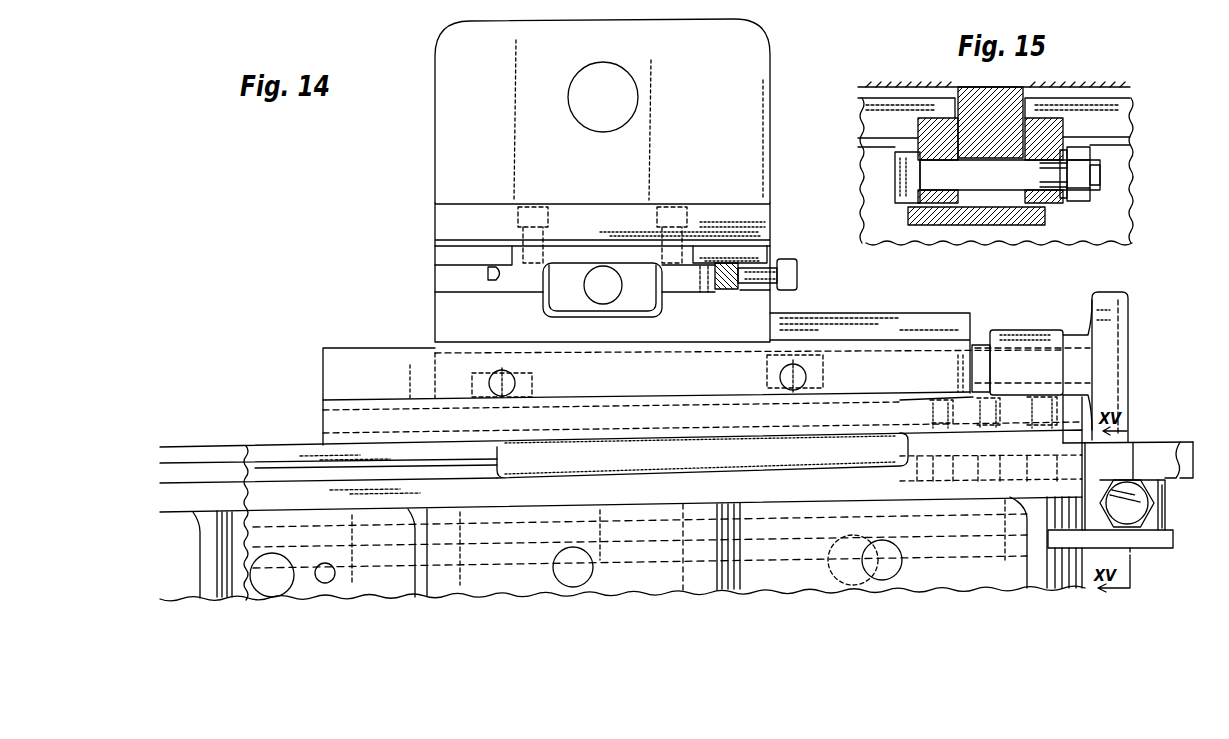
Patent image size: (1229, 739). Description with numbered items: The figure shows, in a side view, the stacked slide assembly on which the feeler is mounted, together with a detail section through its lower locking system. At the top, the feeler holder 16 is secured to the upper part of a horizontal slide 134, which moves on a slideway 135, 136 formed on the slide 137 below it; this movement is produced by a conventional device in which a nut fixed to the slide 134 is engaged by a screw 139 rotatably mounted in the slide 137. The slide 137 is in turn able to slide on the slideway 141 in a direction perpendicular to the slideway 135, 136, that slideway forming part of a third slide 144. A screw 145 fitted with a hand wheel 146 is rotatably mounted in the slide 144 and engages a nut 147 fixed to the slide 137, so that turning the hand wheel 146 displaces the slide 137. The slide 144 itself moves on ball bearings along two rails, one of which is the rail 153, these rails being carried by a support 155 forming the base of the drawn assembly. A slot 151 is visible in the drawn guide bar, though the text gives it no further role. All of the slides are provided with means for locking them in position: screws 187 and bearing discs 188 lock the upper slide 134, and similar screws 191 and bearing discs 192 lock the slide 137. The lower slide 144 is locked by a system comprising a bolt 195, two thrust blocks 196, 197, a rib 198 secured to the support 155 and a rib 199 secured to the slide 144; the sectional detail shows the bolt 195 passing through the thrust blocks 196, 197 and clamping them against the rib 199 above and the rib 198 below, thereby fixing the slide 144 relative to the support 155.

In FIG. 14, the feeler holder 16 is at (437, 51).
In FIG. 14, the horizontal slide 134 is at (437, 226).
In FIG. 14, the slideway 135 is at (488, 273).
In FIG. 14, the slideway 136 is at (697, 288).
In FIG. 14, the slide 137 is at (437, 322).
In FIG. 14, the screw 139 is at (603, 277).
In FIG. 14, the slideway 141 is at (323, 368).
In FIG. 14, the third slide 144 is at (325, 419).
In FIG. 15, the third slide 144 is at (903, 98).
In FIG. 14, the screw 145 is at (975, 343).
In FIG. 14, the hand wheel 146 is at (1112, 300).
In FIG. 14, the nut 147 is at (897, 390).
In FIG. 14, the slot 151 is at (680, 430).
In FIG. 14, the rail 153 is at (272, 452).
In FIG. 14, the support 155 is at (622, 549).
In FIG. 14, the screw 187 is at (790, 262).
In FIG. 14, the bearing disc 188 is at (730, 290).
In FIG. 14, the screw 191 is at (514, 378).
In FIG. 14, the bearing disc 192 is at (533, 385).
In FIG. 14, the bolt 195 is at (1146, 527).
In FIG. 15, the bolt 195 is at (1104, 171).
In FIG. 14, the thrust block 196 is at (1141, 455).
In FIG. 15, the thrust block 196 is at (925, 128).
In FIG. 15, the thrust block 197 is at (1064, 123).
In FIG. 14, the rib 198 is at (1138, 545).
In FIG. 15, the rib 198 is at (1042, 217).
In FIG. 14, the rib 199 is at (1172, 447).
In FIG. 15, the rib 199 is at (1005, 108).